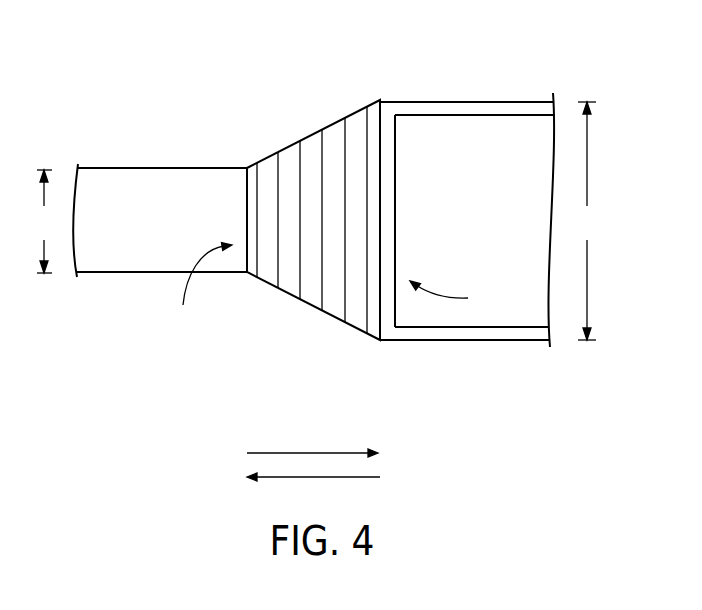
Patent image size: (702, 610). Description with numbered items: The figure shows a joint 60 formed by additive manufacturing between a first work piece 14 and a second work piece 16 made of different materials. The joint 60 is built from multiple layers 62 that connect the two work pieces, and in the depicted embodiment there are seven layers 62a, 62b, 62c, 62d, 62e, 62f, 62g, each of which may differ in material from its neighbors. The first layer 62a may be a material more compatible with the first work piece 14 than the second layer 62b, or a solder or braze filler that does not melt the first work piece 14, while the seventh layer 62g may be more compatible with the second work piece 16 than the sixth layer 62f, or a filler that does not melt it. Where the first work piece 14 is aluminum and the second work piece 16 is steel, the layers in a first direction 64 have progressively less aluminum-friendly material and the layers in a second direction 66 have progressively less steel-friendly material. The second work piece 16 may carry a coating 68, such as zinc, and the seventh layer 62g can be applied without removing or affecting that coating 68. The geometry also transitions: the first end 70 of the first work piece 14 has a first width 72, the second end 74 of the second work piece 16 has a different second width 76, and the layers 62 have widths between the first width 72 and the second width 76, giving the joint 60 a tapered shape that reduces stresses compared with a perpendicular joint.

The first work piece 14 is at (173, 235).
The second work piece 16 is at (467, 197).
The joint 60 is at (248, 82).
The layers 62 is at (303, 255).
The first layer 62a is at (252, 265).
The second layer 62b is at (268, 163).
The third layer 62c is at (288, 283).
The fourth layer 62d is at (312, 145).
The fifth layer 62e is at (335, 305).
The sixth layer 62f is at (357, 122).
The seventh layer 62g is at (363, 246).
The first direction 64 is at (307, 453).
The second direction 66 is at (320, 477).
The coating 68 is at (482, 108).
The first end 70 is at (203, 291).
The first width 72 is at (44, 221).
The second end 74 is at (452, 297).
The second width 76 is at (587, 221).